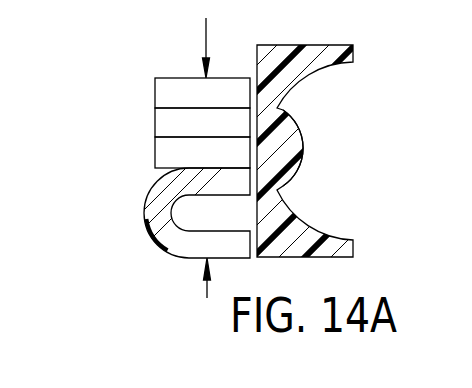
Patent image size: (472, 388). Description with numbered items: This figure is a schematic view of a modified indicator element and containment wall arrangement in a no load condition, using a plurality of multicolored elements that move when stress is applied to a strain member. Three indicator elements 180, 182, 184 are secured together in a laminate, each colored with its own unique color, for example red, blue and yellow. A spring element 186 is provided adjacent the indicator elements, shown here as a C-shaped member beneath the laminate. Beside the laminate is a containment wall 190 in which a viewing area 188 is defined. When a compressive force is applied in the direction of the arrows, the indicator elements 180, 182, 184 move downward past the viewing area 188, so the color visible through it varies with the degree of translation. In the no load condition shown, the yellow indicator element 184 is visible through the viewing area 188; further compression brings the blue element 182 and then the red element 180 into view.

The indicator element 180 is at (160, 97).
The indicator element 182 is at (158, 125).
The indicator element 184 is at (158, 158).
The spring element 186 is at (153, 223).
The viewing area 188 is at (299, 168).
The containment wall 190 is at (300, 121).